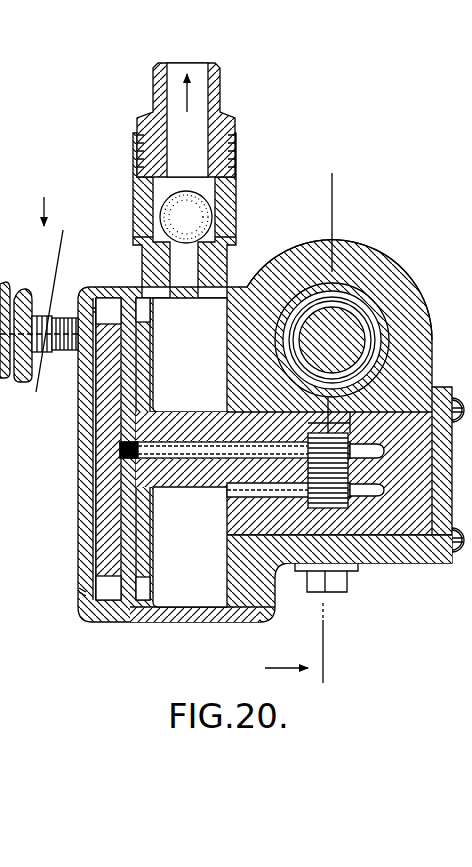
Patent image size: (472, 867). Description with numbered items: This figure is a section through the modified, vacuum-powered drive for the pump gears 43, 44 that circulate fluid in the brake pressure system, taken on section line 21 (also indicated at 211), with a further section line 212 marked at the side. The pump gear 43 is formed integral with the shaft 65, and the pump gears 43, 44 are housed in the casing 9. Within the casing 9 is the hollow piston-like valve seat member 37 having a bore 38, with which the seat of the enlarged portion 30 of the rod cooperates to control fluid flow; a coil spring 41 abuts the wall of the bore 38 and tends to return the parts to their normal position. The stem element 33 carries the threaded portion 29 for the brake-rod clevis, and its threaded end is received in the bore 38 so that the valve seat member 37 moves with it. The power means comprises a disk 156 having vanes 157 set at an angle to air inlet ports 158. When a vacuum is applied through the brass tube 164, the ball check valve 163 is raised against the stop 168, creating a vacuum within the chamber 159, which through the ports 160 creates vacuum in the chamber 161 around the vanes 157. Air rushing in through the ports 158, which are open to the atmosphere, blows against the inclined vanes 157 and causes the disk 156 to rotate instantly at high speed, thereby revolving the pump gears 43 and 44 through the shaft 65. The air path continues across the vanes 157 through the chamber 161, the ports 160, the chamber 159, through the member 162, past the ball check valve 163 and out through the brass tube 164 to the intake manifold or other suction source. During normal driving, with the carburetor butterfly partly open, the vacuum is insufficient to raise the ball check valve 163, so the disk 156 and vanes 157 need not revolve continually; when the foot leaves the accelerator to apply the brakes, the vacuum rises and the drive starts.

The casing 9 is at (372, 262).
The section line 21- 21 is at (307, 643).
The section line 21-21 (top) 211 is at (331, 222).
The section line 22-22 212 is at (52, 294).
The threaded portion 29 is at (39, 366).
The enlarged portion 30 is at (345, 325).
The stem element 33 is at (6, 290).
The hollow piston-like valve seat member 37 is at (378, 300).
The bore 38 is at (386, 338).
The coil spring 41 is at (362, 325).
The pump gear 43 is at (335, 433).
The pump gear 44 is at (373, 561).
The shaft 65 is at (215, 452).
The disk 156 is at (90, 514).
The vanes 157 is at (113, 307).
The air inlet ports 158 is at (90, 306).
The chamber 159 is at (185, 592).
The ports 160 is at (145, 312).
The chamber 161 is at (105, 613).
The member 162 is at (222, 252).
The ball check valve 163 is at (190, 218).
The brass tube 164 is at (218, 100).
The stop 168 is at (180, 177).